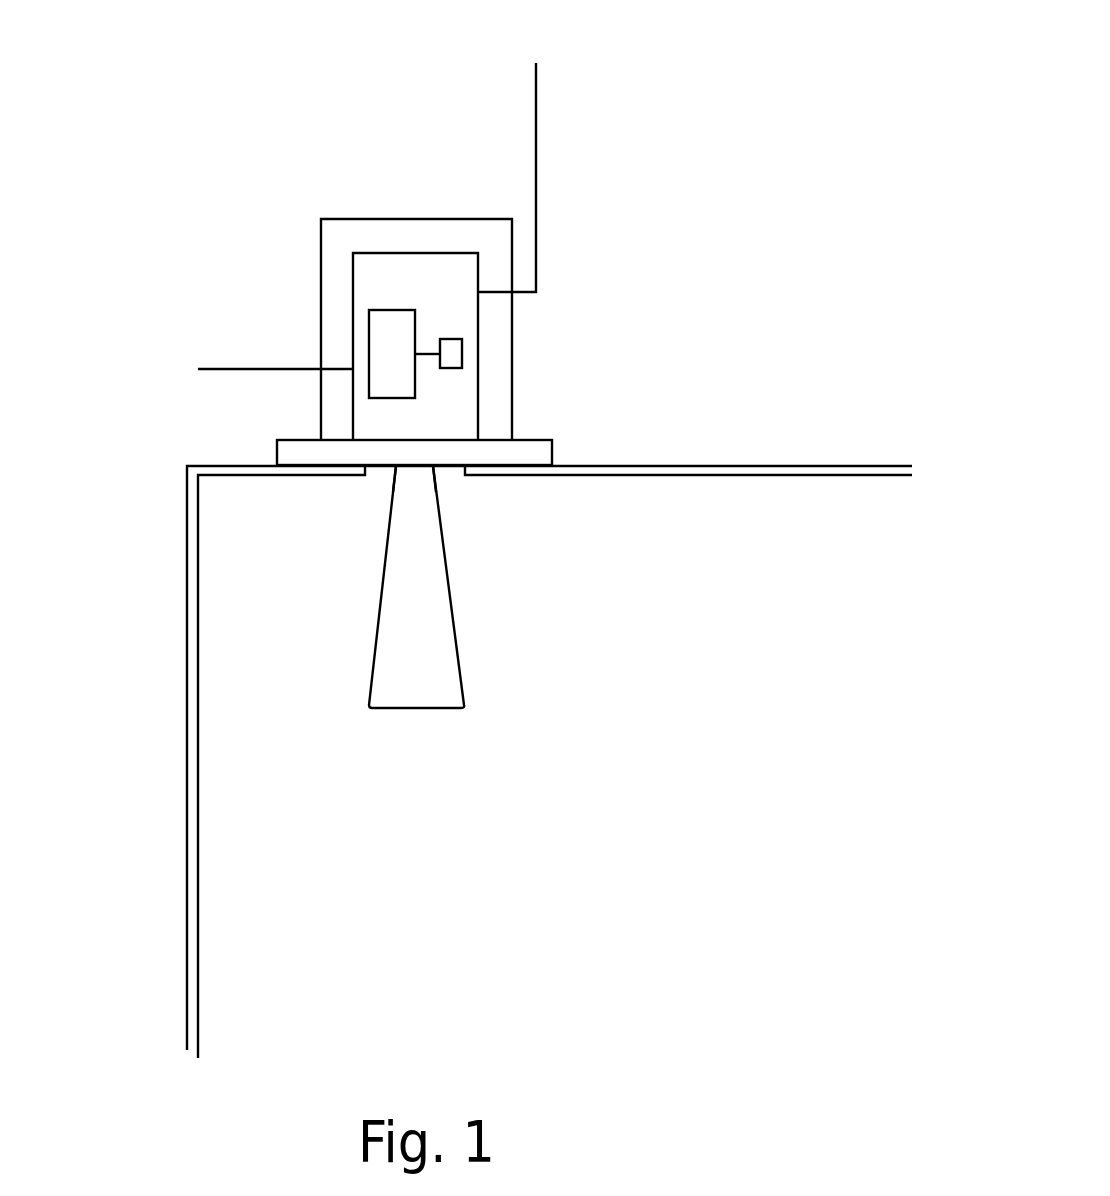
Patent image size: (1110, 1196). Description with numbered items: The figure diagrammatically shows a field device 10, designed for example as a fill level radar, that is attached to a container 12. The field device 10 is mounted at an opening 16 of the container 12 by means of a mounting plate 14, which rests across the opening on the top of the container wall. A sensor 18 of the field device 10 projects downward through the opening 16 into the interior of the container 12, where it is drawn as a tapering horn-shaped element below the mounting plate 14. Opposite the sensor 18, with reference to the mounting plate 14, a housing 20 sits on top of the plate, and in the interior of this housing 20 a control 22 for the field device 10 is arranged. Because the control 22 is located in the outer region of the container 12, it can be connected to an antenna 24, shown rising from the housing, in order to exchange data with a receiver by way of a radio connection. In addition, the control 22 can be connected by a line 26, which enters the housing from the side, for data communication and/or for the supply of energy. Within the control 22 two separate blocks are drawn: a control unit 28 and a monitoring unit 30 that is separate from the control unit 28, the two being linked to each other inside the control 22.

The field device 10 is at (190, 108).
The container 12 is at (190, 748).
The mounting plate 14 is at (538, 452).
The opening 16 is at (457, 480).
The sensor 18 is at (463, 682).
The housing 20 is at (512, 312).
The control 22 is at (440, 270).
The antenna 24 is at (538, 128).
The line 26 is at (249, 366).
The control unit 28 is at (383, 383).
The monitoring unit 30 is at (457, 356).